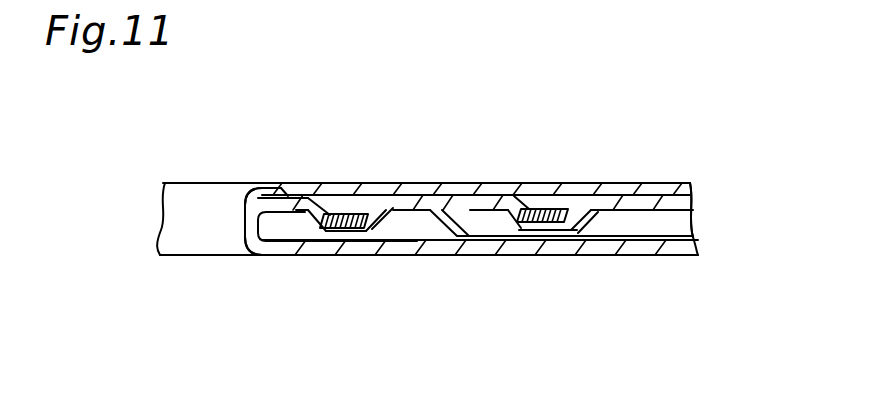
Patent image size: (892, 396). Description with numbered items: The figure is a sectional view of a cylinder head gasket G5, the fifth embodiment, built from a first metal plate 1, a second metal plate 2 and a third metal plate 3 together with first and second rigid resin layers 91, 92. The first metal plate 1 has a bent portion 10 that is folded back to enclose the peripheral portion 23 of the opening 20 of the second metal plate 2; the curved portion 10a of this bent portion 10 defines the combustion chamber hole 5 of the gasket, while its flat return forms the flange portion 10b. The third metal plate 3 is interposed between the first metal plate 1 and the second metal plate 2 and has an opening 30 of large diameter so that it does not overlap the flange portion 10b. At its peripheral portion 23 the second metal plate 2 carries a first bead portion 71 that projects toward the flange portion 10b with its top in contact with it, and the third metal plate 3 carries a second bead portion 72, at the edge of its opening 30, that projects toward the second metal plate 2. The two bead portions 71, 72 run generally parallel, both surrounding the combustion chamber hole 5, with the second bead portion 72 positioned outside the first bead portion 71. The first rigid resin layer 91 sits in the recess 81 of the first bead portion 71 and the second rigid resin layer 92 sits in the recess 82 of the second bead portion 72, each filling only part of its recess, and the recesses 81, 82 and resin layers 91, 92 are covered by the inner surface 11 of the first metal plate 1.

The first metal plate 1 is at (667, 186).
The second metal plate 2 is at (683, 247).
The third metal plate 3 is at (686, 200).
The combustion chamber hole 5 is at (193, 192).
The bent portion 10 is at (303, 247).
The curved portion 10a is at (243, 228).
The flange portion 10b is at (322, 247).
The inner surface 11 is at (579, 187).
The opening 20 is at (250, 187).
The peripheral portion 23 is at (296, 194).
The opening 30 is at (452, 202).
The first bead portion 71 is at (358, 237).
The second bead portion 72 is at (550, 232).
The recess 81 is at (336, 212).
The recess 82 is at (556, 208).
The first rigid resin layer 91 is at (362, 203).
The second rigid resin layer 92 is at (530, 205).
The cylinder head gasket G5 is at (686, 178).